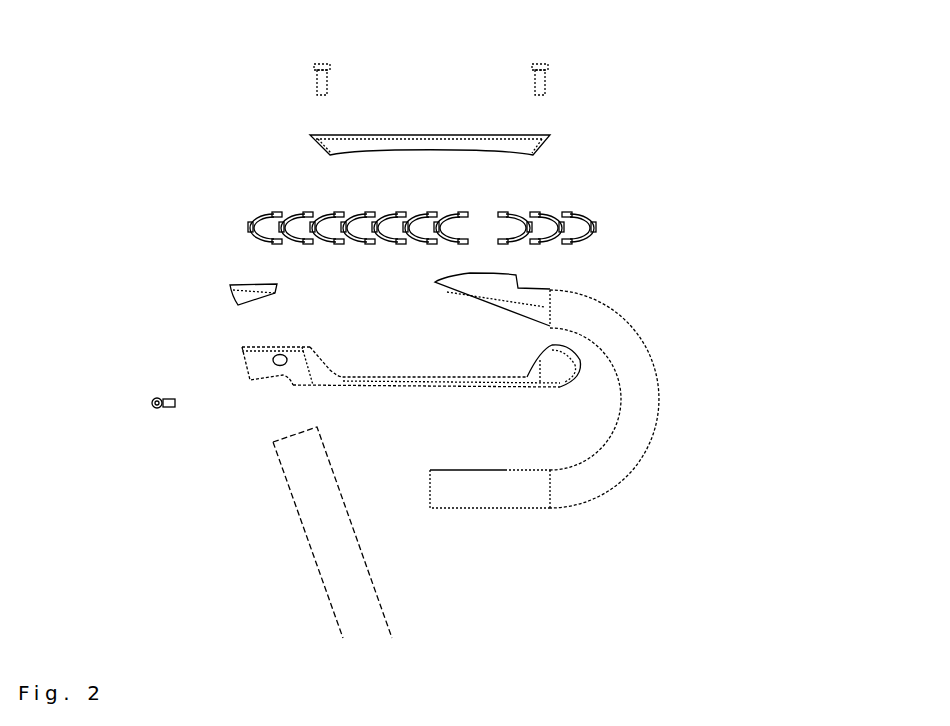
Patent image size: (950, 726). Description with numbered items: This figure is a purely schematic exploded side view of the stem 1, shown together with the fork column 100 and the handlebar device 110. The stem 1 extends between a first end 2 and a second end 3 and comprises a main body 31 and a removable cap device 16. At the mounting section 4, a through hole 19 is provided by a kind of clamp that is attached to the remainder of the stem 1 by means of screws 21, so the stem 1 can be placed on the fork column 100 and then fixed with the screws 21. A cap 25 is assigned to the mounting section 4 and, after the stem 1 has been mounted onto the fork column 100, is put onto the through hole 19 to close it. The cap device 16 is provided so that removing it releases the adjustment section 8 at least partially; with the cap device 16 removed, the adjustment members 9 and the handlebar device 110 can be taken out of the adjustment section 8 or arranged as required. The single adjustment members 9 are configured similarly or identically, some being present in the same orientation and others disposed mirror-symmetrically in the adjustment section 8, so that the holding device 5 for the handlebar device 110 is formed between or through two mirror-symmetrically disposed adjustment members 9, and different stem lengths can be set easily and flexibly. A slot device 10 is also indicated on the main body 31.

The stem 1 is at (117, 152).
The first end 2 is at (280, 333).
The second end 3 is at (582, 352).
The mounting section 4 is at (265, 413).
The holding device 5 is at (483, 225).
The adjustment section 8 is at (392, 358).
The adjustment member 9 is at (420, 227).
The slot device 10 is at (450, 360).
The cap device 16 is at (433, 135).
The through hole 19 is at (270, 347).
The screws 21 is at (317, 78).
The cap 25 is at (253, 285).
The main body 31 is at (437, 390).
The fork column 100 is at (315, 550).
The handlebar device 110 is at (630, 463).